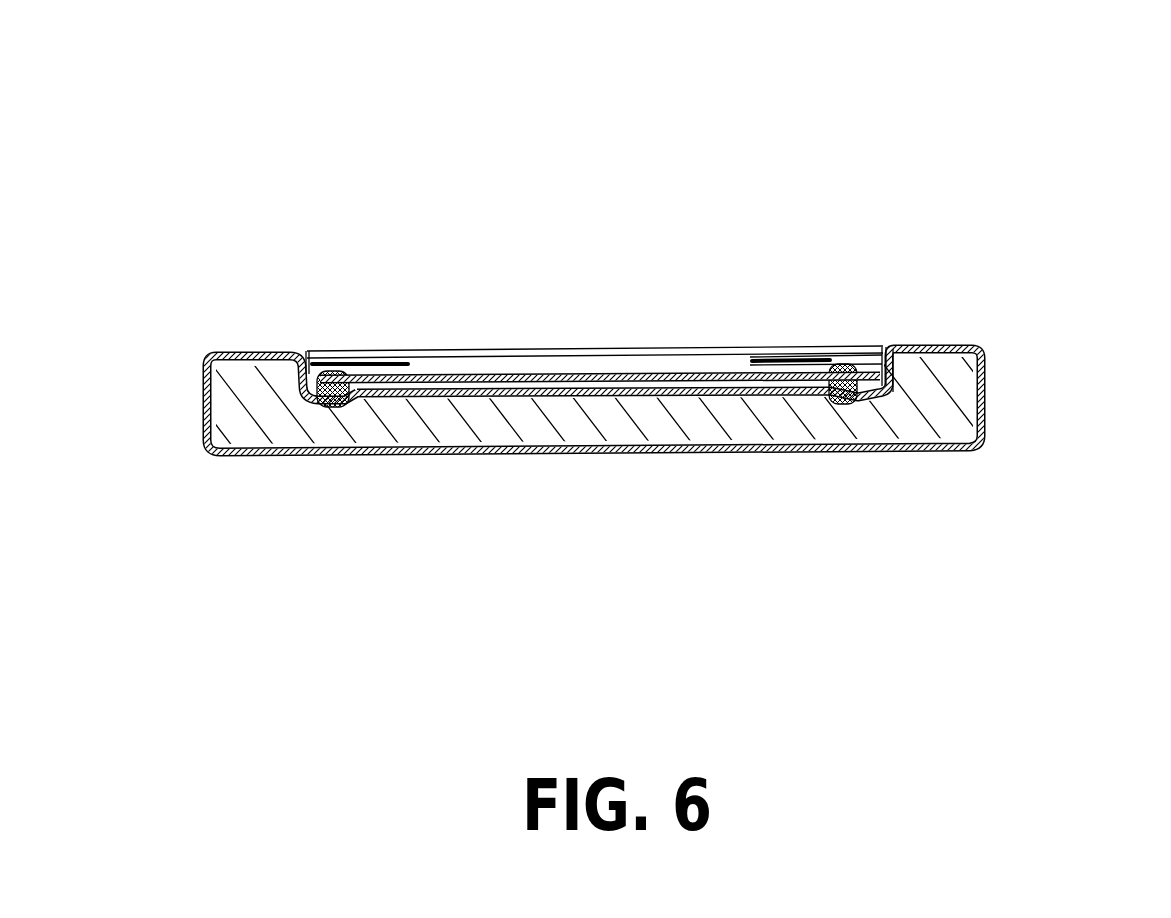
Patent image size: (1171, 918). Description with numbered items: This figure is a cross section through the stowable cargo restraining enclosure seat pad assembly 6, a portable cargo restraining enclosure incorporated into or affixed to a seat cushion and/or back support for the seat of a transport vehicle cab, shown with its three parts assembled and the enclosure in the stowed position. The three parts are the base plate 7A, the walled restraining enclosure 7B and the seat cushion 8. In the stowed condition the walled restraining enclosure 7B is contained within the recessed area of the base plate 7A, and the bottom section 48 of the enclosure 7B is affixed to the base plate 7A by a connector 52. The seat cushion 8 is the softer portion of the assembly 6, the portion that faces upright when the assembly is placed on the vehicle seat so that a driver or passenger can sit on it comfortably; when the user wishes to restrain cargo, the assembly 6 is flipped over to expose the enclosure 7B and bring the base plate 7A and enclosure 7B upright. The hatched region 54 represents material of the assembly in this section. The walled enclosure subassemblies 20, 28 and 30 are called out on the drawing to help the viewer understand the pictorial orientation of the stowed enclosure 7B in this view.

The stowable cargo restraining enclosure seat pad assembly 6 is at (590, 484).
The base plate 7A is at (1016, 300).
The walled restraining enclosure 7B is at (601, 208).
The seat cushion 8 is at (655, 459).
The walled enclosure subassembly 20 is at (596, 286).
The walled enclosure subassembly 28 is at (404, 292).
The walled enclosure subassembly 30 is at (816, 300).
The bottom section 48 is at (600, 294).
The connector 52 is at (591, 483).
The potting material 54 is at (576, 488).